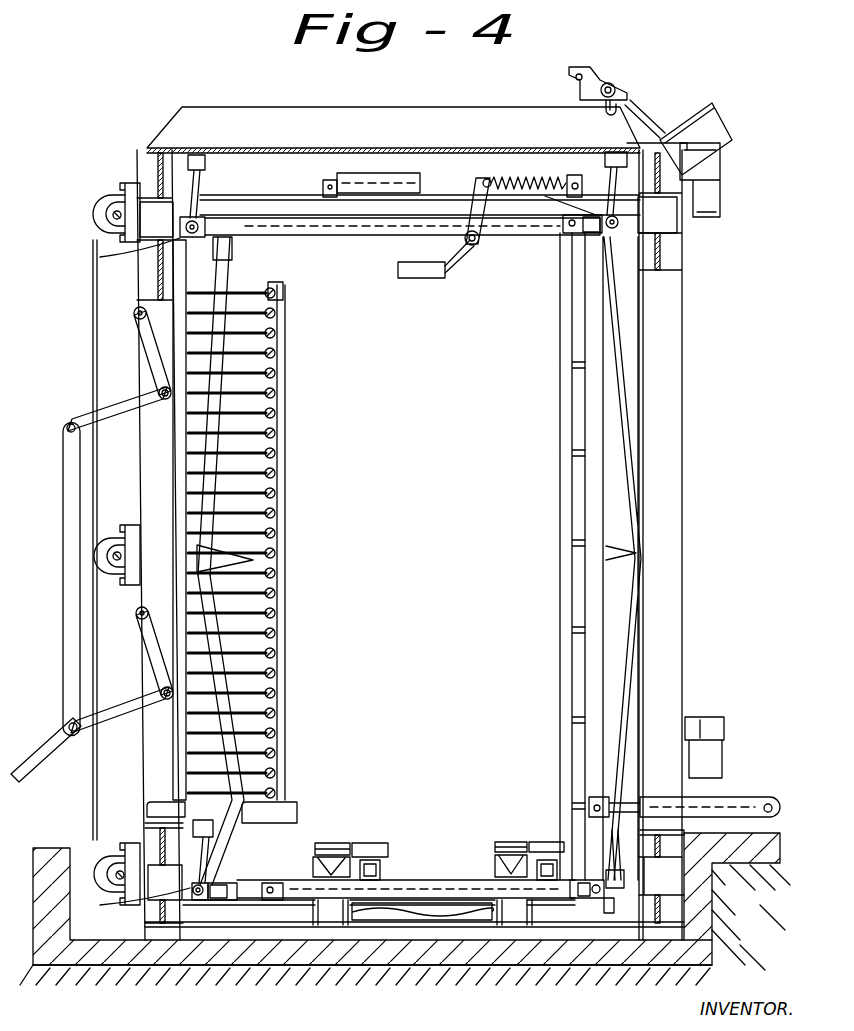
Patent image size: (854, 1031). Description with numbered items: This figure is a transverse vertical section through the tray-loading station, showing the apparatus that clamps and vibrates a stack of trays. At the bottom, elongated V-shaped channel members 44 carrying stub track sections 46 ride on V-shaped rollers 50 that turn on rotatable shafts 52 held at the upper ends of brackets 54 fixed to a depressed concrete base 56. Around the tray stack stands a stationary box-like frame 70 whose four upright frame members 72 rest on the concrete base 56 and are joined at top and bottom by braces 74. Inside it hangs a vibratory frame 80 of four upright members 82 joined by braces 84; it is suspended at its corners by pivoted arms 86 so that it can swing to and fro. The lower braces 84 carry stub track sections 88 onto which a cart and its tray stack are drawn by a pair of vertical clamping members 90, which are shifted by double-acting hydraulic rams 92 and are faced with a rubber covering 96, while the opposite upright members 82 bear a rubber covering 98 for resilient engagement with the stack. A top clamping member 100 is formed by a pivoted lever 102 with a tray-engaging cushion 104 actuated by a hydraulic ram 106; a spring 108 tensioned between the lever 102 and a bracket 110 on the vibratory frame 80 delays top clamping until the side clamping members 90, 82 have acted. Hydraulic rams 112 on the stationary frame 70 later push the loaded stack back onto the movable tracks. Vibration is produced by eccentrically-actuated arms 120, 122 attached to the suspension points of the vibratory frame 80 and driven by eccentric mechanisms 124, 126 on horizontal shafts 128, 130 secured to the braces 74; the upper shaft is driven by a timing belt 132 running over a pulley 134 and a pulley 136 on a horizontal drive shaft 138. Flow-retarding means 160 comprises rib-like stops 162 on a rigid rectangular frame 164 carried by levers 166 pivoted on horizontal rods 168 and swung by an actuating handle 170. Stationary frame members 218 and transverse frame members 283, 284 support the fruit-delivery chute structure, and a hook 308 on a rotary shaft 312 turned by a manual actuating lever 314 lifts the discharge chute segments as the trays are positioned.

The V-shaped channel member 44 is at (318, 867).
The stub track section 46 is at (332, 842).
The V-shaped roller 50 is at (310, 930).
The rotatable shaft 52 is at (330, 930).
The bracket 54 is at (425, 925).
The concrete base 56 is at (115, 970).
The stationary frame 70 is at (236, 100).
The upright frame member 72 is at (668, 353).
The brace 74 is at (377, 106).
The vibratory frame 80 is at (565, 632).
The upright member 82 is at (215, 257).
The brace 84 is at (205, 222).
The suspending arm 86 is at (612, 160).
The stub track section 88 is at (370, 842).
The clamping member 90 is at (285, 396).
The hydraulic ram 92 is at (378, 236).
The rubber covering 96 is at (285, 563).
The rubber covering 98 is at (578, 466).
The top clamping member 100 is at (398, 272).
The pivoted lever 102 is at (458, 243).
The tray-engaging cushion 104 is at (447, 273).
The hydraulic ram 106 is at (377, 172).
The spring 108 is at (512, 178).
The bracket 110 is at (572, 193).
The hydraulic ram 112 is at (725, 800).
The actuating arm 120 is at (100, 257).
The actuating arm 122 is at (190, 888).
The eccentric mechanism 124 is at (95, 204).
The eccentric mechanism 126 is at (108, 860).
The eccentric shaft 128 is at (113, 215).
The eccentric shaft 130 is at (120, 879).
The timing belt 132 is at (93, 294).
The pulley 134 is at (112, 188).
The pulley 136 is at (98, 546).
The drive shaft 138 is at (113, 557).
The flow-retarding means 160 is at (290, 437).
The stop 162 is at (275, 334).
The rectangular frame 164 is at (182, 745).
The lever 166 is at (148, 355).
The horizontal rod 168 is at (160, 392).
The actuating handle 170 is at (40, 742).
The stationary frame member 218 is at (712, 120).
The transverse frame member 283 is at (722, 177).
The transverse frame member 284 is at (708, 726).
The hook 308 is at (603, 112).
The rotary shaft 312 is at (616, 88).
The manual actuating lever 314 is at (569, 88).